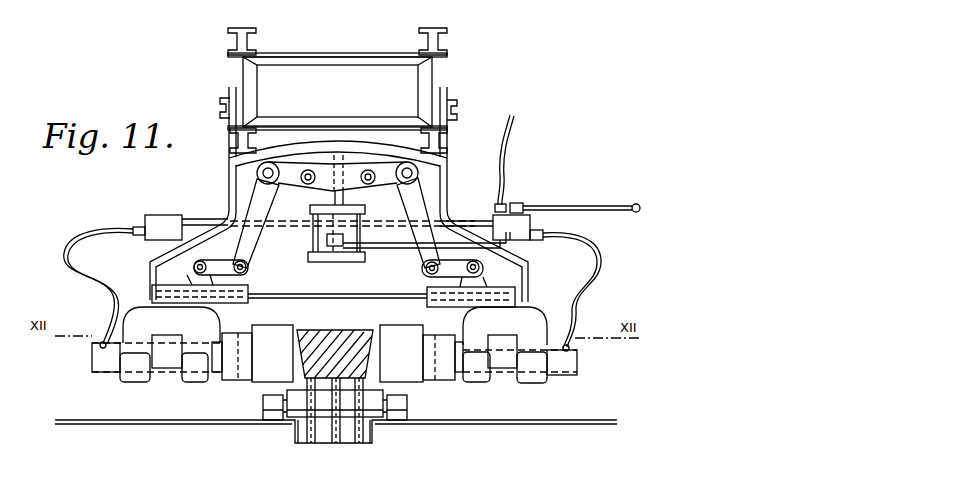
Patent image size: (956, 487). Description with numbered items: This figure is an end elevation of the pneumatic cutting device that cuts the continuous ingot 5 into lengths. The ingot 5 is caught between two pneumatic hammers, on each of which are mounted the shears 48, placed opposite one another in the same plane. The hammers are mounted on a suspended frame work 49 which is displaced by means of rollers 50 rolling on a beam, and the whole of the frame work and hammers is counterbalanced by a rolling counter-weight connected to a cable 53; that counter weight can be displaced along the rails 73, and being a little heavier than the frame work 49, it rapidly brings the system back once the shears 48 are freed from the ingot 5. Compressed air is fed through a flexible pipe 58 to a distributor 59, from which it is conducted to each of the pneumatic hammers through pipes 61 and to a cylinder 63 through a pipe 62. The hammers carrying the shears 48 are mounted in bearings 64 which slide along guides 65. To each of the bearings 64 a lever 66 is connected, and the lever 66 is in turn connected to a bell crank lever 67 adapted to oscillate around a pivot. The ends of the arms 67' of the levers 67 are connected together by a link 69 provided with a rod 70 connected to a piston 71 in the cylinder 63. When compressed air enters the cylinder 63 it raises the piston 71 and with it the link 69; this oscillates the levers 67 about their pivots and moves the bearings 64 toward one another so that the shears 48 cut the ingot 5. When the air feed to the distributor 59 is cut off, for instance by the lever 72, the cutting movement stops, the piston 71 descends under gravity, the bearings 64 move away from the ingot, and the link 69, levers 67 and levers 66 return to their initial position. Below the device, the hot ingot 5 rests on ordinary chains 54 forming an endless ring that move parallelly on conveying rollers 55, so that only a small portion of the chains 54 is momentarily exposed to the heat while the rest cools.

The ingot 5 is at (340, 337).
The shears 48 is at (408, 378).
The frame work 49 is at (447, 155).
The rollers 50 is at (447, 90).
The cable 53 is at (338, 47).
The chains 54 is at (337, 445).
The conveying rollers 55 is at (373, 408).
The flexible pipe 58 is at (502, 178).
The distributor 59 is at (533, 221).
The pipes 61 is at (197, 218).
The pipe 62 is at (395, 245).
The cylinder 63 is at (312, 233).
The bearings 64 is at (334, 345).
The guides 65 is at (268, 295).
The lever 66 is at (465, 258).
The bell crank lever 67 is at (313, 231).
The arms 67' is at (337, 169).
The link 69 is at (345, 172).
The rod 70 is at (333, 197).
The piston 71 is at (327, 250).
The lever 72 is at (587, 207).
The rails 73 is at (446, 27).